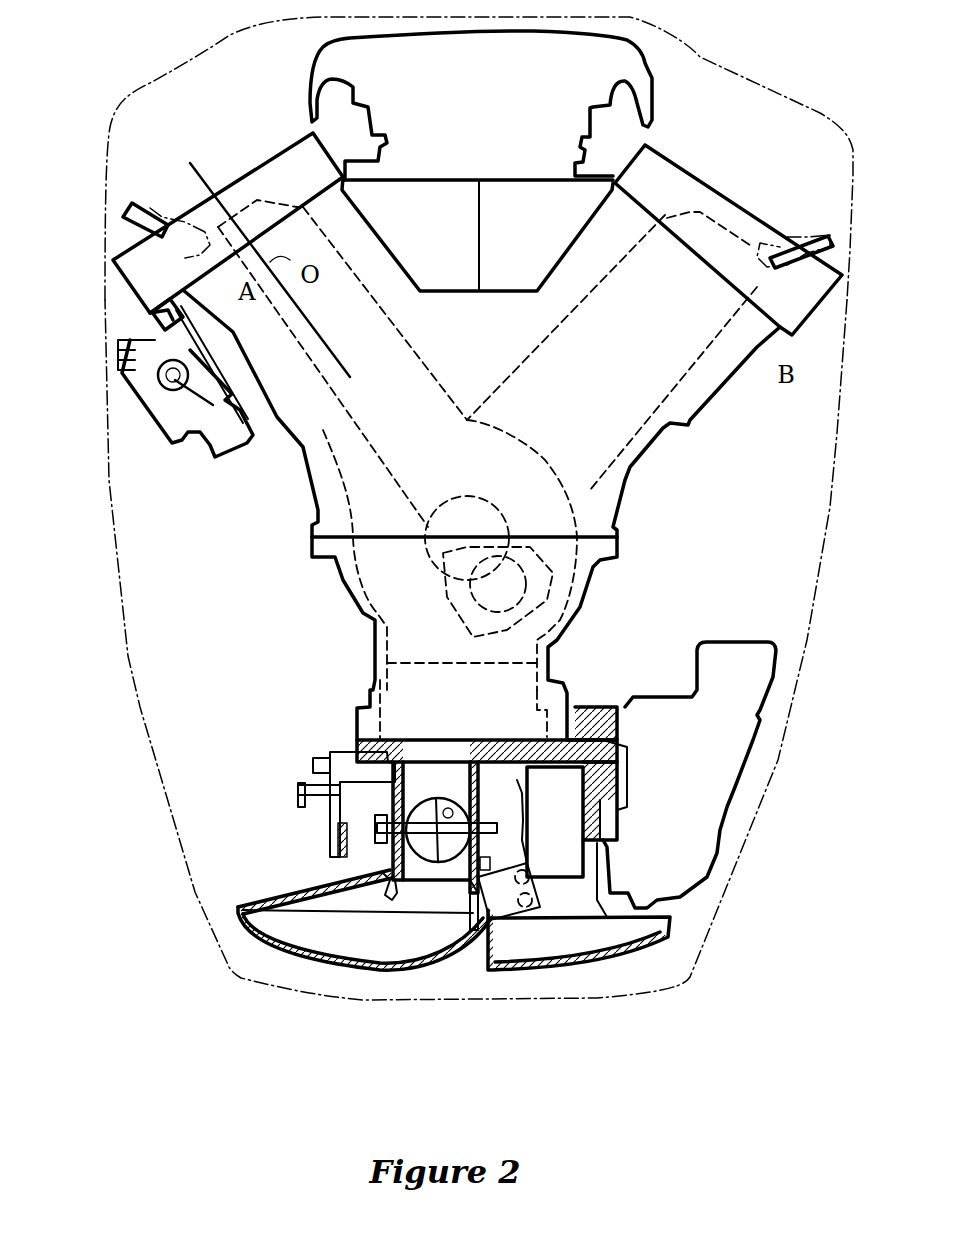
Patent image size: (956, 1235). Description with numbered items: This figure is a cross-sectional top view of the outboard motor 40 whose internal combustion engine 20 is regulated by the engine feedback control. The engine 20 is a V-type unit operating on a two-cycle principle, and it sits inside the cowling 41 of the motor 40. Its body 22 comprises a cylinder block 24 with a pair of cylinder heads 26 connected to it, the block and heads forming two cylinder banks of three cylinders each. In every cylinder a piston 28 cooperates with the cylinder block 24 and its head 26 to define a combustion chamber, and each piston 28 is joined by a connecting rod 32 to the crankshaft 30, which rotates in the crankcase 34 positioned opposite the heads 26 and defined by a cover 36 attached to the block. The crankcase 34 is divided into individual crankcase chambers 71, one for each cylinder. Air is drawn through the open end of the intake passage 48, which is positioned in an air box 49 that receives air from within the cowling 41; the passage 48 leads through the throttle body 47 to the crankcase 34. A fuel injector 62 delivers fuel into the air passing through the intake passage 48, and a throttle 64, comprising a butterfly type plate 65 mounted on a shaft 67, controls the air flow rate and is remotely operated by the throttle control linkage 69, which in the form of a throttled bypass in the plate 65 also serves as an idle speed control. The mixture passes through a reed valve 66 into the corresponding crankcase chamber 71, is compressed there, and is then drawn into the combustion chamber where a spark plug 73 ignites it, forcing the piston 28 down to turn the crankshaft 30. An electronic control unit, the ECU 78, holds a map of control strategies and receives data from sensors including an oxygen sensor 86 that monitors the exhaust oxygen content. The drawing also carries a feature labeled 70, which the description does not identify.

The internal combustion engine 20 is at (250, 78).
The body 22 is at (690, 487).
The cylinder block 24 is at (293, 430).
The cylinder heads 26 is at (112, 284).
The piston 28 is at (307, 460).
The crankshaft 30 is at (420, 567).
The connecting rod 32 is at (393, 462).
The crankcase 34 is at (342, 617).
The cover 36 is at (590, 608).
The outboard motor 40 is at (807, 57).
The cowling 41 is at (140, 709).
The throttle body 47 is at (615, 782).
The intake passage 48 is at (397, 810).
The air box 49 is at (273, 900).
The fuel injector 62 is at (522, 830).
The throttle 64 is at (422, 872).
The butterfly type plate 65 is at (427, 810).
The reed valve 66 is at (397, 663).
The shaft 67 is at (438, 853).
The throttle control linkage 69 is at (300, 790).
The cylinder head center portion 70 is at (513, 210).
The crankcase chambers 71 is at (334, 568).
The spark plug 73 is at (150, 208).
The ECU 78 is at (642, 72).
The oxygen sensor 86 is at (135, 418).